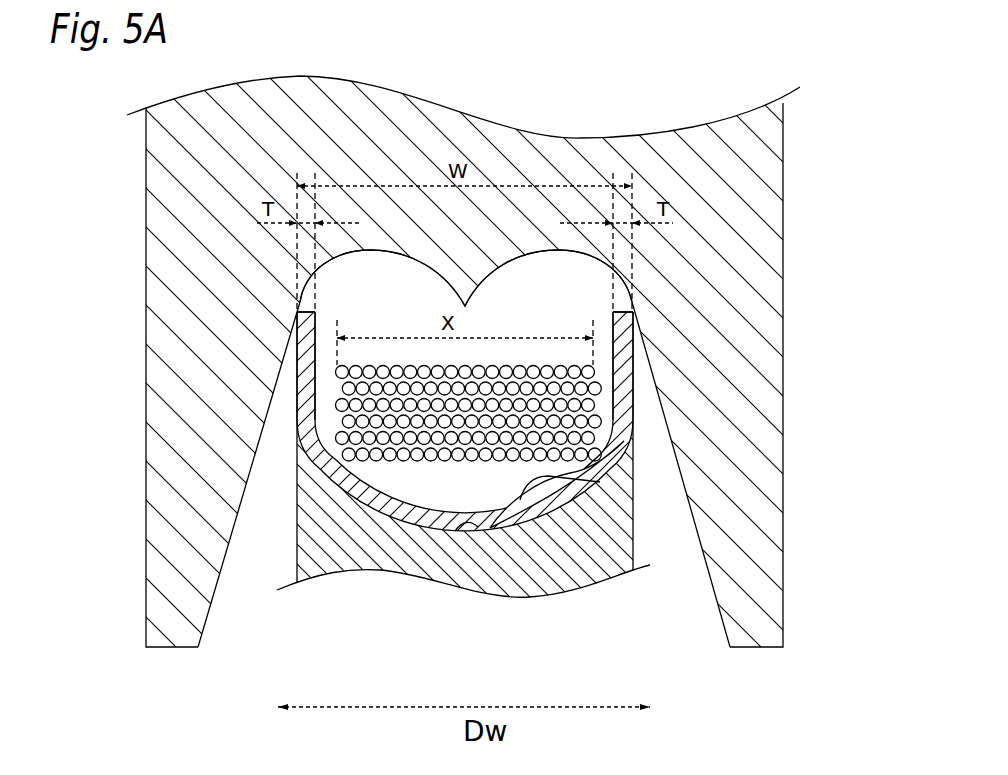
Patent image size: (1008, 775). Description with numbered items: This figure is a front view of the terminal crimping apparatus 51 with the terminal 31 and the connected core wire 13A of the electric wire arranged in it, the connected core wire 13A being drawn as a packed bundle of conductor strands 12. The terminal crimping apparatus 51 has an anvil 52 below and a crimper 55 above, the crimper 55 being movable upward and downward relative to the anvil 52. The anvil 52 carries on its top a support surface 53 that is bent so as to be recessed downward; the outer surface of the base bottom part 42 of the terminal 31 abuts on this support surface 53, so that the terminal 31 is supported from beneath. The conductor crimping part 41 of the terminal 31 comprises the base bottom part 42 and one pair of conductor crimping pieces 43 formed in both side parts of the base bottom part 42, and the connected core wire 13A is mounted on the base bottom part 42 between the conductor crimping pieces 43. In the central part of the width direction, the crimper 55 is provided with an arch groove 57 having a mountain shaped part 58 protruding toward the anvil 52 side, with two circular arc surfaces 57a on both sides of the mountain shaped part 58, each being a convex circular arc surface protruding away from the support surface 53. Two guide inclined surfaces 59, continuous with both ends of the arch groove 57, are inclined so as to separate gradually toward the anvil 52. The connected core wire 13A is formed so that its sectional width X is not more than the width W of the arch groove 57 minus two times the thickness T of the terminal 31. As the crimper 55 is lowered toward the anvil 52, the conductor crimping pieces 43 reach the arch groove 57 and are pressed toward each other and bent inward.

The wire bundle (conductor wires) 12 is at (380, 366).
The connected core wire 13A is at (318, 452).
The terminal 31 is at (640, 398).
The conductor crimping part 41 is at (633, 447).
The base bottom part 42 is at (596, 489).
The conductor crimping pieces 43 is at (633, 347).
The terminal crimping apparatus 51 is at (126, 176).
The anvil 52 is at (578, 567).
The support surface 53 is at (470, 532).
The crimper 55 is at (763, 163).
The arch groove 57 is at (300, 372).
The circular arc surfaces 57a is at (382, 252).
The mountain shaped part 58 is at (468, 302).
The guide inclined surfaces 59 is at (228, 583).